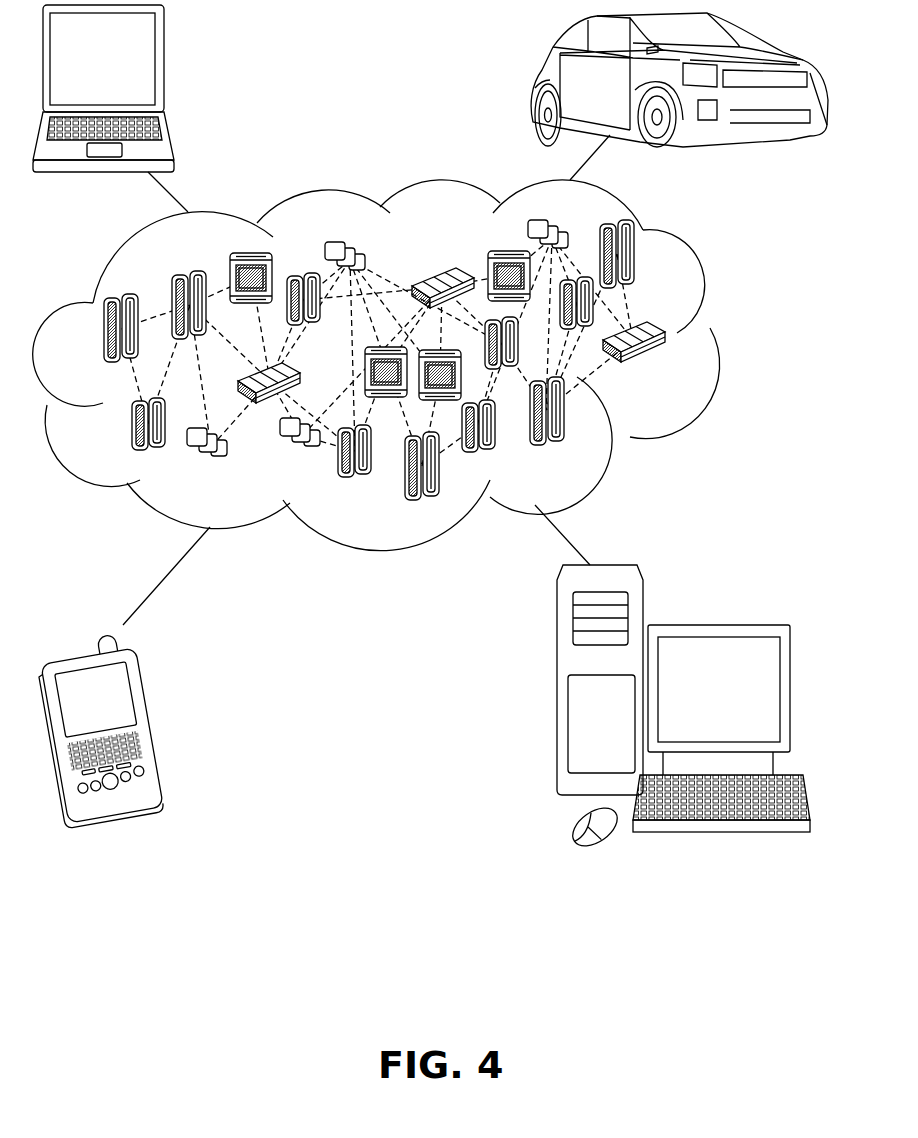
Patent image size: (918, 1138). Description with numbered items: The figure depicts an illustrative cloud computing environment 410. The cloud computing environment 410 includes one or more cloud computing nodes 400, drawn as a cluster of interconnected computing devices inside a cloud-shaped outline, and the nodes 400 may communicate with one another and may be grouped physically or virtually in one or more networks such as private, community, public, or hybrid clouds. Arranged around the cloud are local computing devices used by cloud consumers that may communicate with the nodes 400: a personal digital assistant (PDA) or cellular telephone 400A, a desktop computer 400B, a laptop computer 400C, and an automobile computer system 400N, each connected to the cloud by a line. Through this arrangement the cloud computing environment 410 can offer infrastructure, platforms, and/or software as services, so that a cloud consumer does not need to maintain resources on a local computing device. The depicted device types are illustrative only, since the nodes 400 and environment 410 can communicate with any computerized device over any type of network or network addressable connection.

The cloud computing nodes 400 is at (668, 367).
The cloud computing environment 410 is at (718, 340).
The personal digital assistant (PDA) or cellular telephone 400A is at (153, 718).
The desktop computer 400B is at (717, 625).
The laptop computer 400C is at (163, 70).
The automobile computer system 400N is at (532, 82).